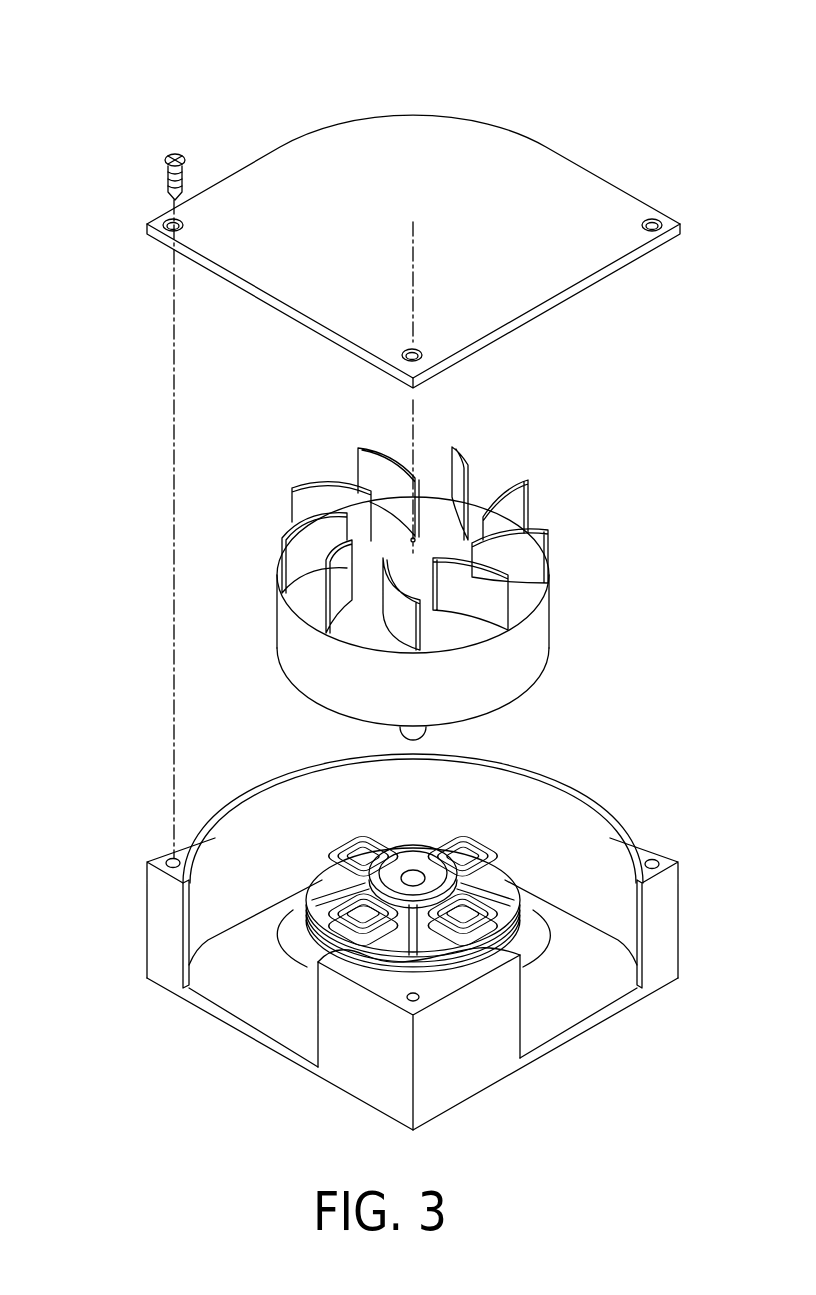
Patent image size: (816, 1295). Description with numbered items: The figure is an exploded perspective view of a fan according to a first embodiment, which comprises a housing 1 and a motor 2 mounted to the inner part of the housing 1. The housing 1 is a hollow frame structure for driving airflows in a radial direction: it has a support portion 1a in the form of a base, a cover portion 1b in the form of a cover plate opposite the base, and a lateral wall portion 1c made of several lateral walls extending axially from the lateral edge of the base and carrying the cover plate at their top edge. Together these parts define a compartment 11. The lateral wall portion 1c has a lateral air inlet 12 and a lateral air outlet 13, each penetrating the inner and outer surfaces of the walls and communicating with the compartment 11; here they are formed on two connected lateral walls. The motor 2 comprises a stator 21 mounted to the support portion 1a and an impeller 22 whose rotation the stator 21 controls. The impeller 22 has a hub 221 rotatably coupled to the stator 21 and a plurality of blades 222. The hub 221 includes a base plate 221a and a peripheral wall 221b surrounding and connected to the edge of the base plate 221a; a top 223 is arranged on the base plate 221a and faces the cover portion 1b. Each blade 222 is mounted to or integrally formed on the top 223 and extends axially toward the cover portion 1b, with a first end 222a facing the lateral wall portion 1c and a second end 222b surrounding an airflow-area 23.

The housing 1 is at (177, 118).
The support portion 1a is at (217, 995).
The cover portion 1b is at (260, 172).
The lateral wall portion 1c is at (163, 902).
The motor 2 is at (575, 455).
The compartment 11 is at (287, 831).
The lateral air inlet 12 is at (600, 998).
The lateral air outlet 13 is at (263, 1012).
The stator 21 is at (490, 840).
The impeller 22 is at (86, 532).
The airflow-area 23 is at (430, 537).
The hub 221 is at (383, 618).
The base plate 221a is at (522, 605).
The peripheral wall 221b is at (532, 647).
The blades 222 is at (320, 517).
The first end 222a is at (293, 547).
The second end 222b is at (378, 467).
The top 223 is at (283, 601).